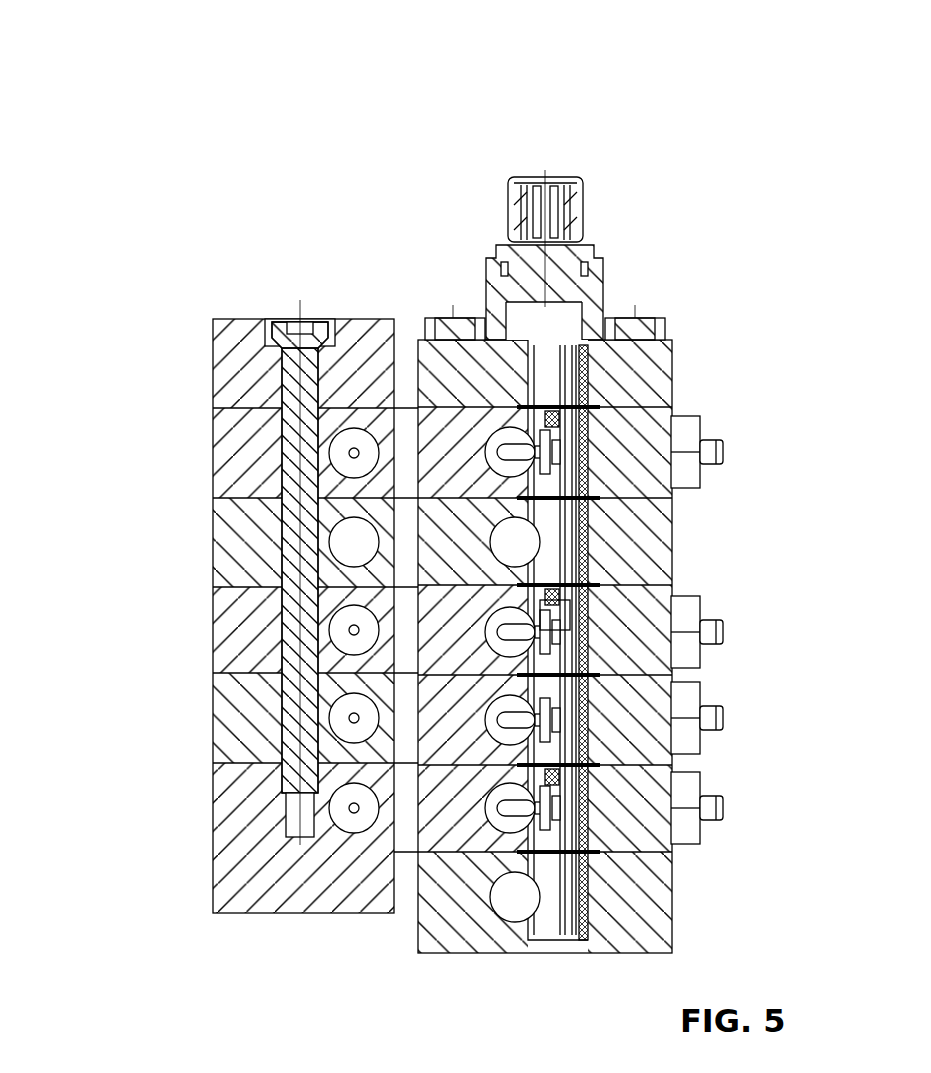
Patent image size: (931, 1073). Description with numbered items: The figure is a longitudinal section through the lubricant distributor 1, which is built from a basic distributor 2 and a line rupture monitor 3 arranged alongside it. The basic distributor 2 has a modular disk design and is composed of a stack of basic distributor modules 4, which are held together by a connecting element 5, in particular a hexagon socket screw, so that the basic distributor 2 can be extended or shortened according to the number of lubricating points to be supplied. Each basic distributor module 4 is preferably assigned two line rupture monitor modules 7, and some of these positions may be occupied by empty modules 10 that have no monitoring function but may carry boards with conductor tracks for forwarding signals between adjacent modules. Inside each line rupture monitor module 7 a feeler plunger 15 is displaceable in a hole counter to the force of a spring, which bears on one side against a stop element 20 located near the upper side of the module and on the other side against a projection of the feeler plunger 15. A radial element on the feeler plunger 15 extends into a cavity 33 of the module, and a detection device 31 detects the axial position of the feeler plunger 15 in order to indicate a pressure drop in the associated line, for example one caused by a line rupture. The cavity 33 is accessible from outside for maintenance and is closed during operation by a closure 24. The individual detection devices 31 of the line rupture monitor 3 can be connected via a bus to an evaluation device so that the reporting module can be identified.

The lubricant distributor 1 is at (451, 500).
The basic distributor 2 is at (240, 603).
The line rupture monitor 3 is at (628, 561).
The basic distributor module 4 is at (240, 456).
The connecting element 5 is at (297, 377).
The closure 24 is at (360, 438).
The line rupture monitor module 7 is at (640, 424).
The empty module 10 is at (590, 646).
The stop element 20 is at (687, 432).
The feeler plunger 15 is at (712, 452).
The cavity 33 is at (573, 613).
The detection device 31 is at (603, 648).